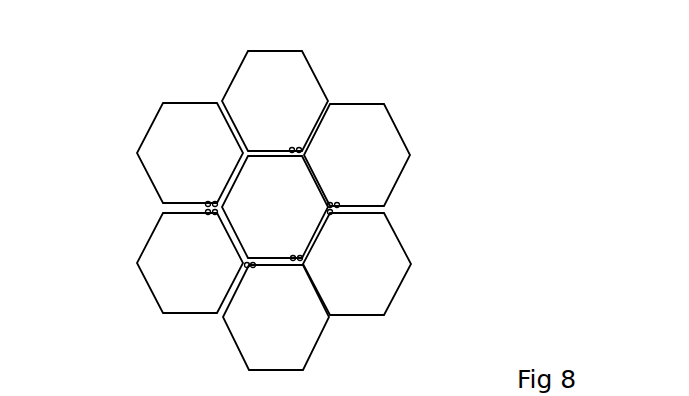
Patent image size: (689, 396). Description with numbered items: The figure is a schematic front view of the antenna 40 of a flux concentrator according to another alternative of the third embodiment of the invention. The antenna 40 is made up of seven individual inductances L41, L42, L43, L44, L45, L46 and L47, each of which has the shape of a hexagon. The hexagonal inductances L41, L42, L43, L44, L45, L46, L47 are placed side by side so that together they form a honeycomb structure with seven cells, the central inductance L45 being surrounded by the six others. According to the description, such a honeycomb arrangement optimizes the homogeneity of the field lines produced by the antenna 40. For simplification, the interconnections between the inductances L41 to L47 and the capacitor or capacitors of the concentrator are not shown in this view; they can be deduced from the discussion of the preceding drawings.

The antenna 40 is at (120, 213).
The individual inductance L41 is at (178, 102).
The individual inductance L42 is at (393, 122).
The individual inductance L43 is at (396, 233).
The individual inductance L44 is at (173, 314).
The individual inductance L45 is at (263, 256).
The individual inductance L46 is at (307, 58).
The individual inductance L47 is at (318, 338).